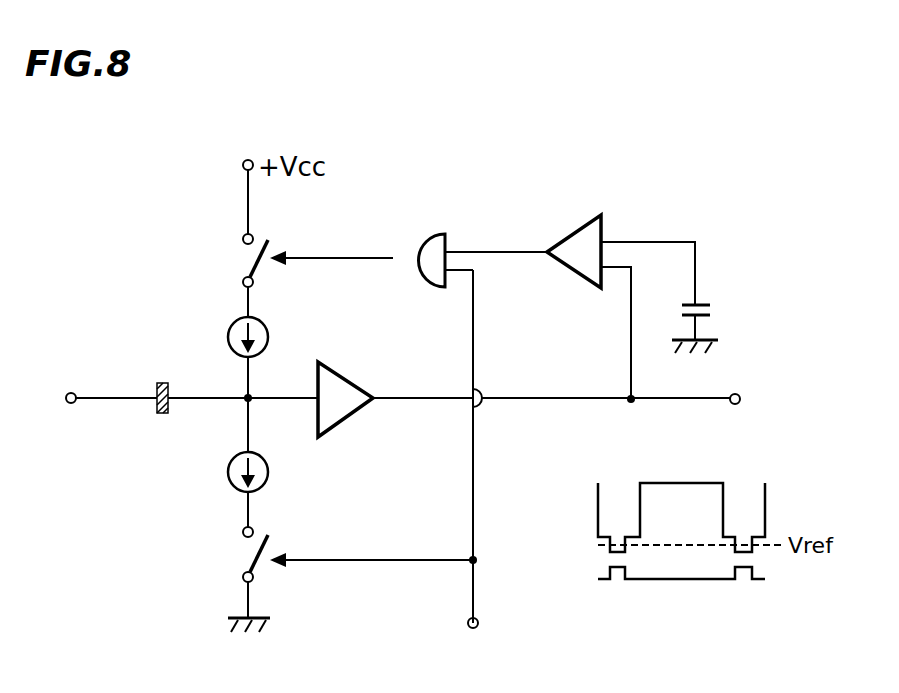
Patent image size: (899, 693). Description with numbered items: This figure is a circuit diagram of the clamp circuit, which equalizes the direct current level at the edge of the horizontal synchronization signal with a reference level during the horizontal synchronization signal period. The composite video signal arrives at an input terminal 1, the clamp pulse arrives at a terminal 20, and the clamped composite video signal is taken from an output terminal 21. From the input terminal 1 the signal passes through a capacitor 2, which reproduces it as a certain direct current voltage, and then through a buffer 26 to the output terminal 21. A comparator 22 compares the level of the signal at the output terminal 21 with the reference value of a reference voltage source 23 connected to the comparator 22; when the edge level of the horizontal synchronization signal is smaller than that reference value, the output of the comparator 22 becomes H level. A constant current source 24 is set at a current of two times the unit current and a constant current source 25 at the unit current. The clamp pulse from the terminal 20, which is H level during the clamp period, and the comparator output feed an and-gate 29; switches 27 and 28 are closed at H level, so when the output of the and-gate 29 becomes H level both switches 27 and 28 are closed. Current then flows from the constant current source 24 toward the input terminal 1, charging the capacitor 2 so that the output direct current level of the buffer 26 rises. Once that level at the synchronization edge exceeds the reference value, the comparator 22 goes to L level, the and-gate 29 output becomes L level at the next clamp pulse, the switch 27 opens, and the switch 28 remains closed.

The input terminal 1 is at (71, 406).
The capacitor 2 is at (162, 418).
The terminal 20 is at (481, 622).
The output terminal 21 is at (737, 392).
The comparator 22 is at (578, 278).
The reference voltage source 23 is at (703, 302).
The constant current source 24 is at (270, 322).
The constant current source 25 is at (270, 470).
The buffer 26 is at (355, 383).
The switch 27 is at (245, 257).
The switch 28 is at (245, 555).
The and-gate 29 is at (428, 233).